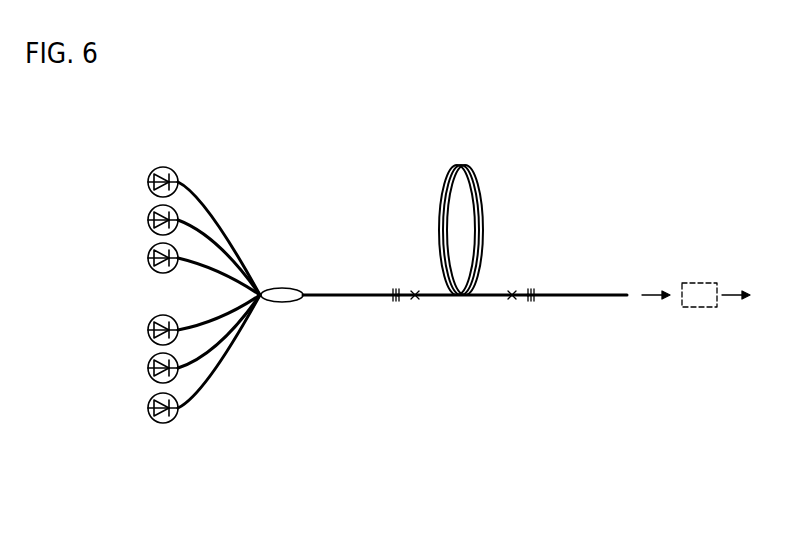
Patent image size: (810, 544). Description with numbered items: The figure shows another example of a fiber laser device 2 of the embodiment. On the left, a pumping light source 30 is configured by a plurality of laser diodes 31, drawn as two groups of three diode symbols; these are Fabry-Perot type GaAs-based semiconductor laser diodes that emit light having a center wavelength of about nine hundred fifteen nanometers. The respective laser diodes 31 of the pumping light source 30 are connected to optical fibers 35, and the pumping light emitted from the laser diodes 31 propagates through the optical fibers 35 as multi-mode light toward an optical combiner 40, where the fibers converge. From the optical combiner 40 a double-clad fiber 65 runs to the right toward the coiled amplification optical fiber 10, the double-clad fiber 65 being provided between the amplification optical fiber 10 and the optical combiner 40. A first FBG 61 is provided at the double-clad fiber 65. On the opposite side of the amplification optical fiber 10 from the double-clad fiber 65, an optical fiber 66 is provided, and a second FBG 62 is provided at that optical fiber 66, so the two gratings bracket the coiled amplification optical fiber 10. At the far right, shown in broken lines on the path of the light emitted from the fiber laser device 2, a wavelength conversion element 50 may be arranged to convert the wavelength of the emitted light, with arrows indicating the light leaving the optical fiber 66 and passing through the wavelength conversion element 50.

The fiber laser device 2 is at (618, 149).
The amplification optical fiber 10 is at (480, 294).
The pumping light source 30 is at (142, 148).
The laser diode 31 is at (149, 182).
The optical fiber 35 is at (193, 192).
The optical combiner 40 is at (288, 296).
The wavelength conversion element 50 is at (707, 287).
The first FBG 61 is at (396, 301).
The second FBG 62 is at (531, 301).
The double-clad fiber 65 is at (332, 295).
The optical fiber 66 is at (590, 295).